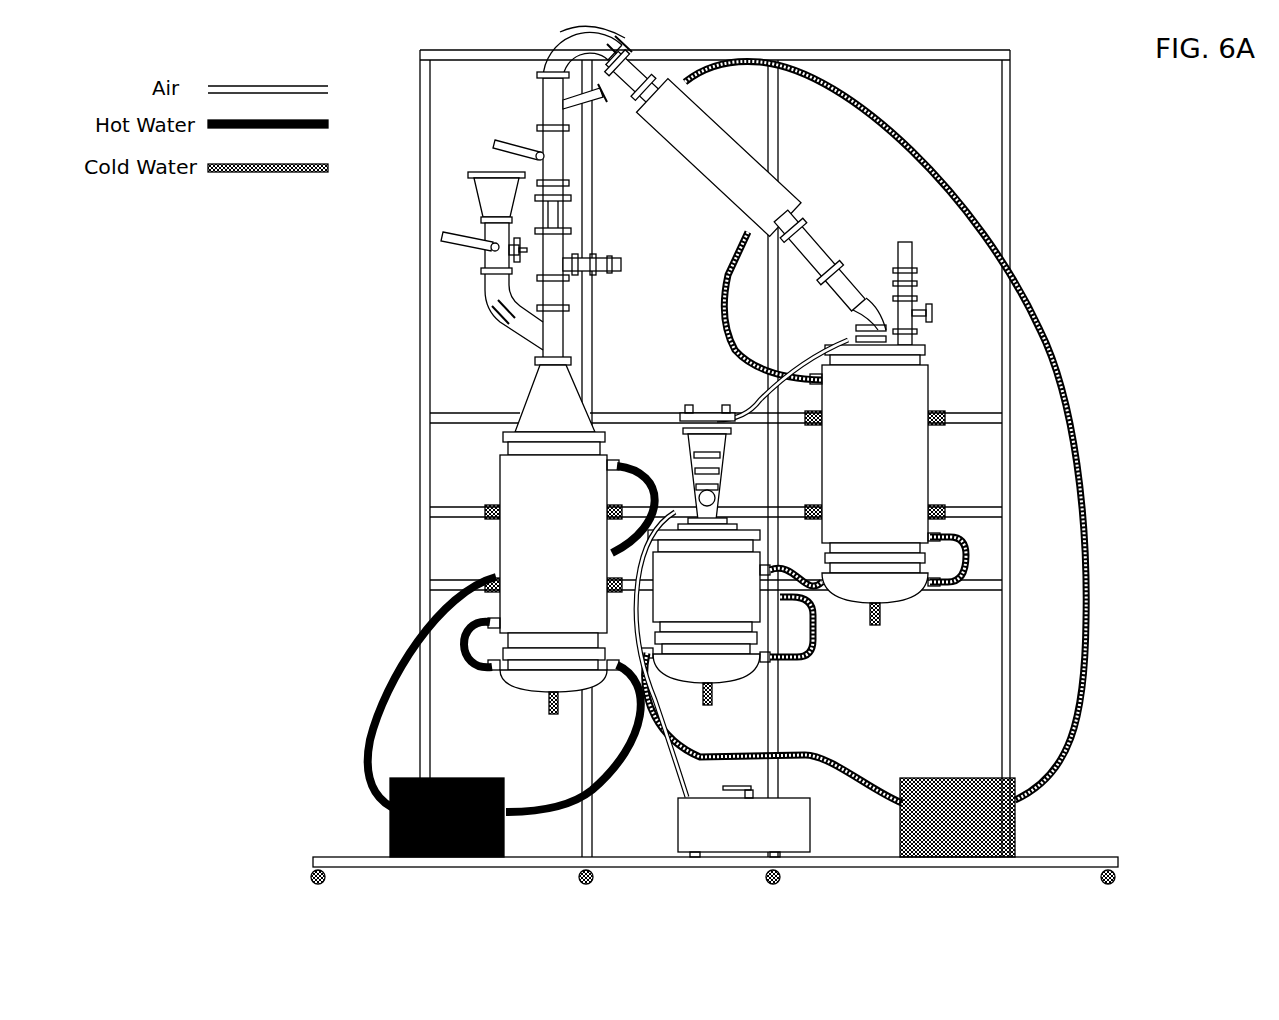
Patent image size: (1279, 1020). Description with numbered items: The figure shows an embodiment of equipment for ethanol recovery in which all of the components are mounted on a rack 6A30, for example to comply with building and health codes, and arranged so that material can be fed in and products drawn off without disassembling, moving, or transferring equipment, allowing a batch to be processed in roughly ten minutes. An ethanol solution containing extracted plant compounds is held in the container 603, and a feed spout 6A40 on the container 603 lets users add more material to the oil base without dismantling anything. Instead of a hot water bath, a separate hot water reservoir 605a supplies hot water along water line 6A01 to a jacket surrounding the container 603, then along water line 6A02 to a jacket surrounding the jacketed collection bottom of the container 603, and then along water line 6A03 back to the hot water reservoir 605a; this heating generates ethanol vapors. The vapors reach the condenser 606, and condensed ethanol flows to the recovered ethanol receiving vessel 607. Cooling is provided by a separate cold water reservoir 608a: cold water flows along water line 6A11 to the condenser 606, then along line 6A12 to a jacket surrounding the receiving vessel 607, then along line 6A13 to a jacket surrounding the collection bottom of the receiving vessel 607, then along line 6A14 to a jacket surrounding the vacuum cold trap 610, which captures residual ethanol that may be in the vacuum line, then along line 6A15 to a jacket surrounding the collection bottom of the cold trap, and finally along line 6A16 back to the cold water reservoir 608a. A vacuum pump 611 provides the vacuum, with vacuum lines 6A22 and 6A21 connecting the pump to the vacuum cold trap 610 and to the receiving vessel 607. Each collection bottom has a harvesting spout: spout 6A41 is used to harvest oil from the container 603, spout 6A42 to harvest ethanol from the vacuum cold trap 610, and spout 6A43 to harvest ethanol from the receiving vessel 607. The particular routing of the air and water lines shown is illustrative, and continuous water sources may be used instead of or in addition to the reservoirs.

The container 603 is at (518, 452).
The condenser 606 is at (735, 193).
The recovered ethanol receiving vessel 607 is at (922, 352).
The vacuum cold trap 610 is at (747, 598).
The vacuum pump 611 is at (810, 822).
The hot water reservoir 605a is at (390, 840).
The cold water reservoir 608a is at (1016, 830).
The water line 6A01 is at (386, 697).
The water line 6A02 is at (468, 665).
The water line 6A03 is at (569, 796).
The water line 6A11 is at (1078, 370).
The line 6A12 is at (733, 276).
The line 6A13 is at (966, 560).
The line 6A14 is at (792, 602).
The line 6A15 is at (813, 662).
The line 6A16 is at (874, 785).
The vacuum line 6A21 is at (757, 400).
The vacuum line 6A22 is at (686, 757).
The rack 6A30 is at (1005, 150).
The feed spout 6A40 is at (482, 185).
The spout 6A41 is at (555, 720).
The spout 6A42 is at (716, 698).
The spout 6A43 is at (880, 628).